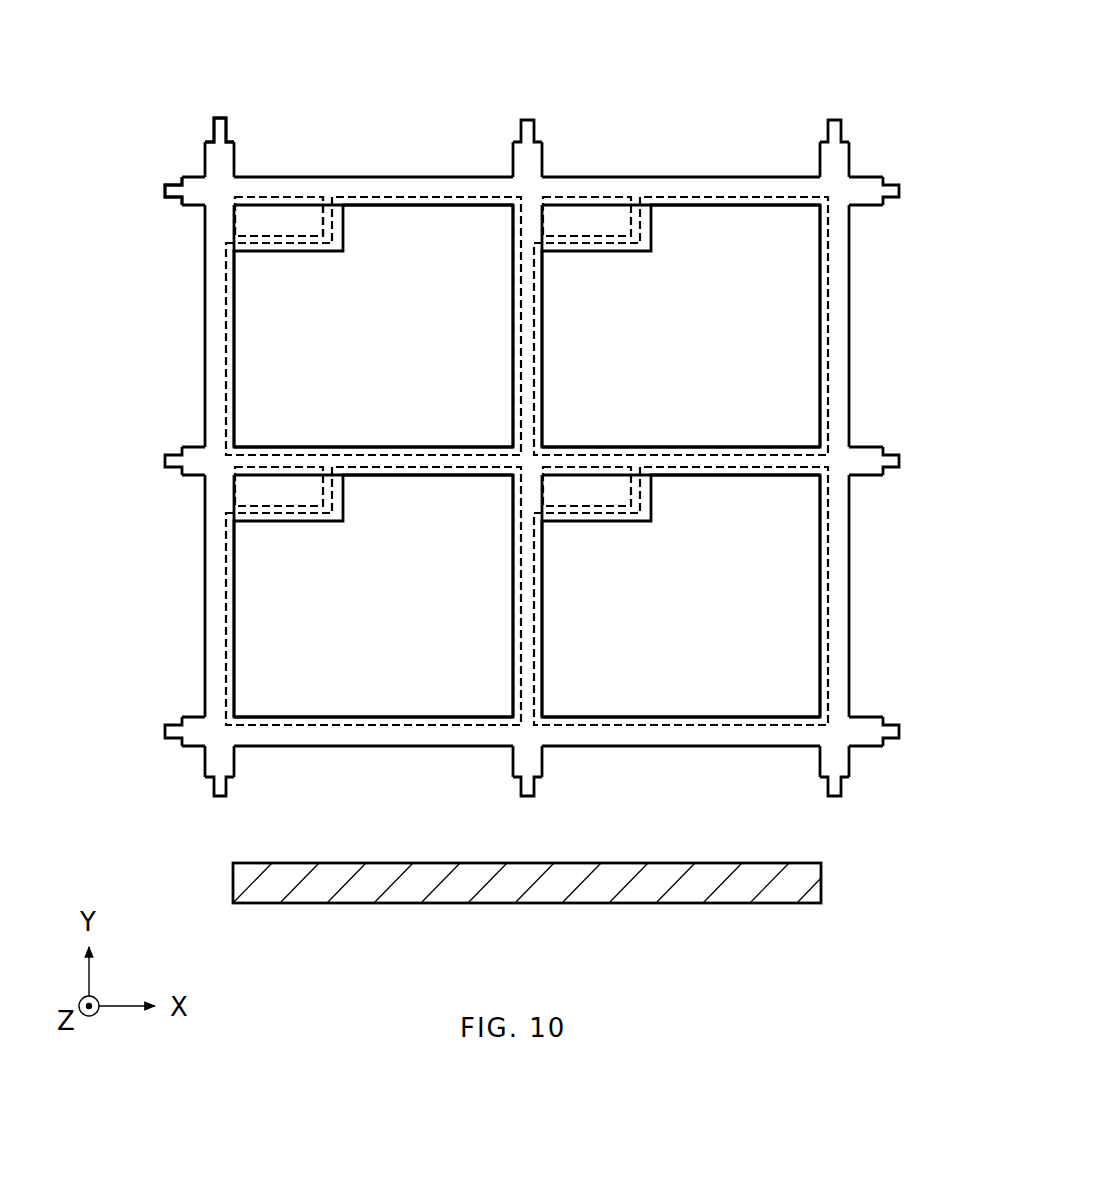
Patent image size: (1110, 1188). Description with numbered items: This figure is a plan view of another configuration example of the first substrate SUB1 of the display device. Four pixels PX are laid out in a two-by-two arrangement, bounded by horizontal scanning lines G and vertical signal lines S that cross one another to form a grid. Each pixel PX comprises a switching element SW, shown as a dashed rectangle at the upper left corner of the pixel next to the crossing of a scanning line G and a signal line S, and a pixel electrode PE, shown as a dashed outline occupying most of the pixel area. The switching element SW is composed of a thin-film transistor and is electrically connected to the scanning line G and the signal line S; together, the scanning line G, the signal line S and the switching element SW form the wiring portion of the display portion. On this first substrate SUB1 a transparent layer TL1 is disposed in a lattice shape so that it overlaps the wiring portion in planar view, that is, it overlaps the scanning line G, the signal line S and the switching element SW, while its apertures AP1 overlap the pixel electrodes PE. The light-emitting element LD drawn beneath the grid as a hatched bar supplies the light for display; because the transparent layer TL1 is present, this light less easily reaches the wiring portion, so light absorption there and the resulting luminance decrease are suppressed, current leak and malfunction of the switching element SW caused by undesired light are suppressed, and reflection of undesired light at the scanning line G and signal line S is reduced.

The first substrate SUB1 is at (542, 436).
The scanning line G is at (165, 461).
The signal line S is at (497, 433).
The transparent layer TL1 is at (217, 160).
The pixel PX is at (363, 190).
The pixel electrode PE is at (226, 299).
The switching element SW is at (608, 196).
The aperture AP1 is at (270, 361).
The light-emitting element LD is at (805, 882).